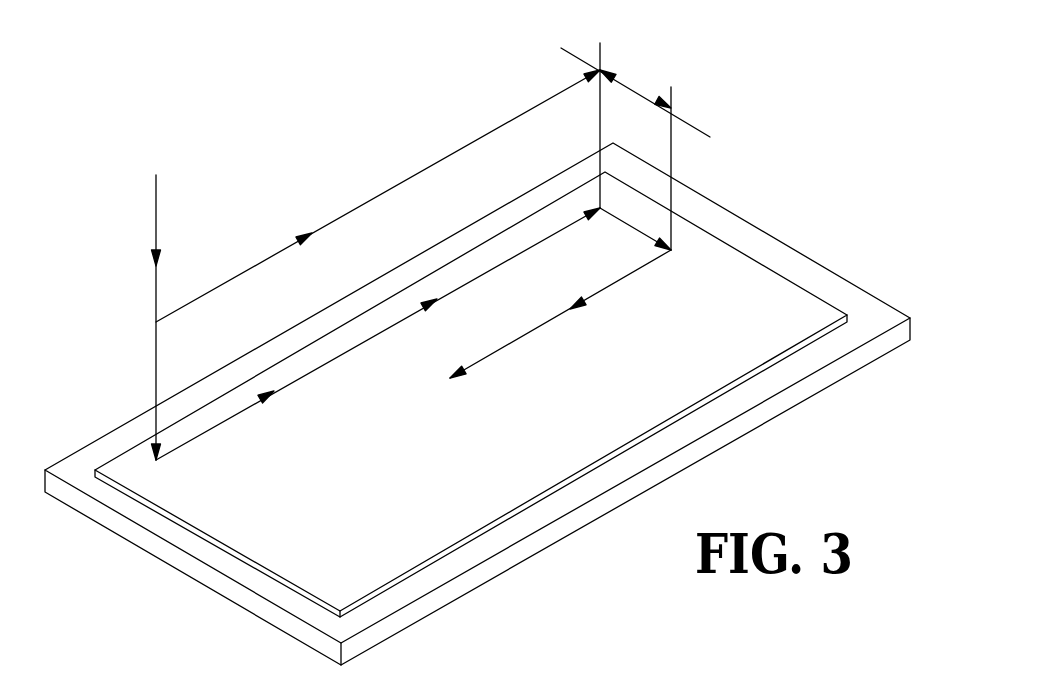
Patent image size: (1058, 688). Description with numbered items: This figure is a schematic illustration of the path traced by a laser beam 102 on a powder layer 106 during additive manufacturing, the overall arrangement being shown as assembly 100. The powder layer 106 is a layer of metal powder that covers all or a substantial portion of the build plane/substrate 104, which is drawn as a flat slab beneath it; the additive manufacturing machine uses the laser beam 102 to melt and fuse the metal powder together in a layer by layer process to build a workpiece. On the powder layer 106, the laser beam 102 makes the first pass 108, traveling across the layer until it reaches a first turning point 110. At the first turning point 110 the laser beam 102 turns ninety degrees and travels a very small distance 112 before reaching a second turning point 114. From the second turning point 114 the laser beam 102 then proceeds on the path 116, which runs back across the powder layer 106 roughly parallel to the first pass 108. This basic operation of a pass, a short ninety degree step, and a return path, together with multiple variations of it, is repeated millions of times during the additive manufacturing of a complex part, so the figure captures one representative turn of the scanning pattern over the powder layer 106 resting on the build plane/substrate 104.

The optical assembly 100 is at (284, 686).
The laser beam 102 is at (156, 212).
The build plane/substrate 104 is at (243, 574).
The powder layer 106 is at (418, 482).
The first pass 108 is at (399, 181).
The first turning point 110 is at (600, 70).
The very small distance 112 is at (640, 90).
The second turning point 114 is at (671, 108).
The path 116 is at (540, 325).